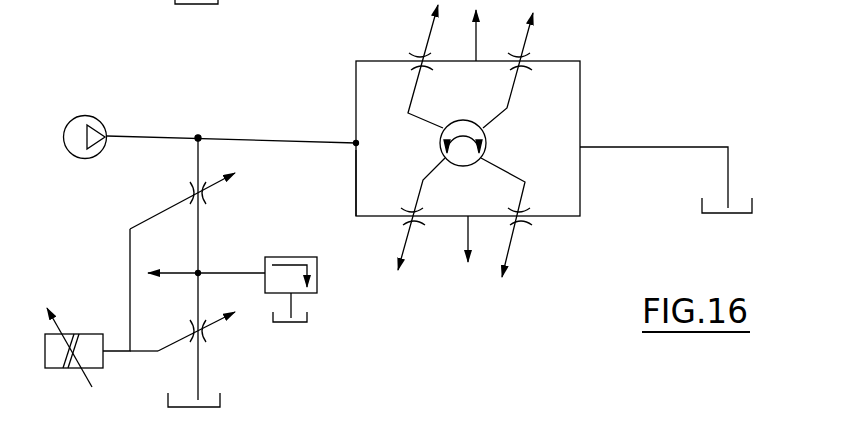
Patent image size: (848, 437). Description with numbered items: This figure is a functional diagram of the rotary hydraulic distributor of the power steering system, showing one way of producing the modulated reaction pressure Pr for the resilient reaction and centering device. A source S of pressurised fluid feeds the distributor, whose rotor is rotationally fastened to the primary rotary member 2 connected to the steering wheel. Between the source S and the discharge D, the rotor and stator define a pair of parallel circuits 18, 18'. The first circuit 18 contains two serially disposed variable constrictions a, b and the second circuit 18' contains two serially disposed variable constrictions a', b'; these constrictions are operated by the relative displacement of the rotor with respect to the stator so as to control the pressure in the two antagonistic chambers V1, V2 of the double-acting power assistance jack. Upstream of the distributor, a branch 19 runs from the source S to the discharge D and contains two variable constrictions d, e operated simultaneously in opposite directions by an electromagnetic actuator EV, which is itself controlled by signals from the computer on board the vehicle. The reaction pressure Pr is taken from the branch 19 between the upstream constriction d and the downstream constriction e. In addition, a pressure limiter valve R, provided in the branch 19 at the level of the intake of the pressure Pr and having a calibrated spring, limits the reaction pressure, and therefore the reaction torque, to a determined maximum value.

The primary rotary member 2 is at (487, 143).
The parallel circuit 18 is at (444, 138).
The parallel circuit 18' is at (327, 183).
The branch 19 is at (196, 159).
The source of pressurised fluid S is at (85, 124).
The pressure limiter valve R is at (318, 281).
The electromagnetic actuator EV is at (74, 346).
The discharge D is at (460, 216).
The reaction pressure Pr is at (174, 261).
The chamber V1 is at (491, 30).
The chamber V2 is at (470, 256).
The variable constriction a is at (427, 66).
The variable constriction b is at (516, 70).
The variable constriction a' is at (421, 214).
The variable constriction b' is at (510, 217).
The variable constriction d is at (182, 201).
The variable constriction e is at (196, 331).